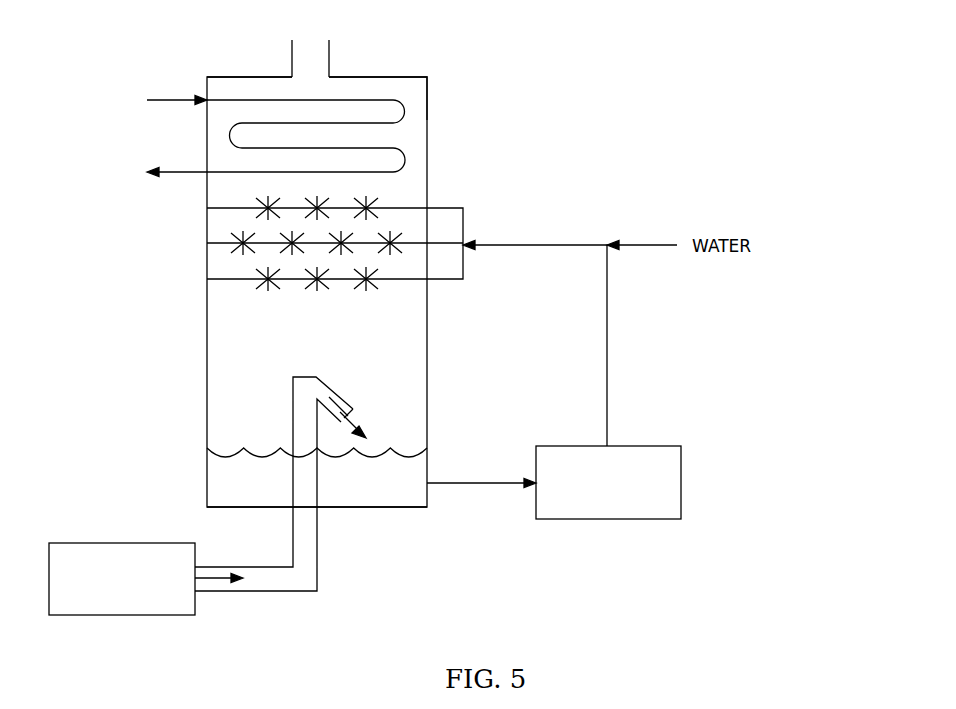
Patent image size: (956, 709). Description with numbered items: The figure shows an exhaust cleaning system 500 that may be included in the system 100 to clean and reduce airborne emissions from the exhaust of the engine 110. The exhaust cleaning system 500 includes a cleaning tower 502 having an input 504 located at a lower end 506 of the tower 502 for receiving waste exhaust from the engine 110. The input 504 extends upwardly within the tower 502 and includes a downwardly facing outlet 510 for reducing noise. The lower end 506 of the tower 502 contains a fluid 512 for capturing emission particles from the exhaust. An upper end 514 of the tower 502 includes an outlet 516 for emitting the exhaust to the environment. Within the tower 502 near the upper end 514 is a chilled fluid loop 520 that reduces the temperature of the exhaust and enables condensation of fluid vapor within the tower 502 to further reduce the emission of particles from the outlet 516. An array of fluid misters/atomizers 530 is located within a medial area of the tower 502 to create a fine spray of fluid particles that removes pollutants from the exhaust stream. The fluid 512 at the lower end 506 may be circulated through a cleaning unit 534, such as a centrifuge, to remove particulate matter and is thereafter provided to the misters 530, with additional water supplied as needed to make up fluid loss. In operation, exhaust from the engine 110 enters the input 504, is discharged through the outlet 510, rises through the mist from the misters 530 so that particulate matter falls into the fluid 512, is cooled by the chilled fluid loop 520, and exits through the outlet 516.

The system 100 is at (692, 608).
The engine 110 is at (147, 615).
The exhaust cleaning system 500 is at (566, 117).
The cleaning tower 502 is at (207, 341).
The input 504 is at (317, 495).
The lower end 506 is at (207, 471).
The downwardly facing outlet 510 is at (345, 404).
The fluid 512 is at (389, 493).
The upper end 514 is at (427, 86).
The outlet 516 is at (329, 53).
The chilled fluid loop 520 is at (405, 110).
The fluid misters/atomizers 530 is at (389, 207).
The cleaning unit 534 is at (681, 495).